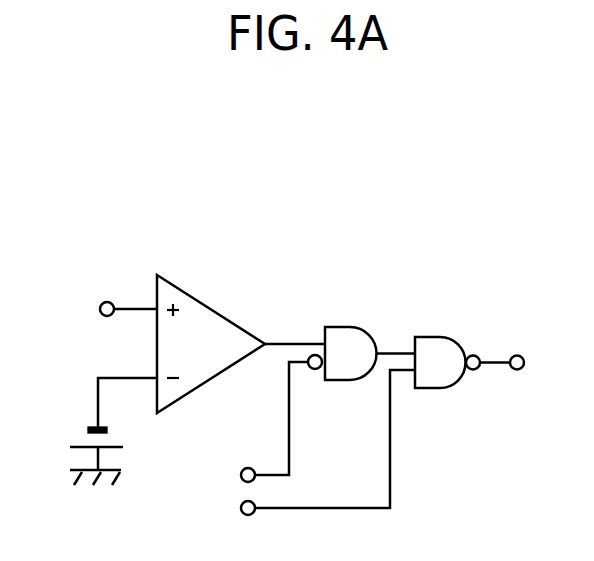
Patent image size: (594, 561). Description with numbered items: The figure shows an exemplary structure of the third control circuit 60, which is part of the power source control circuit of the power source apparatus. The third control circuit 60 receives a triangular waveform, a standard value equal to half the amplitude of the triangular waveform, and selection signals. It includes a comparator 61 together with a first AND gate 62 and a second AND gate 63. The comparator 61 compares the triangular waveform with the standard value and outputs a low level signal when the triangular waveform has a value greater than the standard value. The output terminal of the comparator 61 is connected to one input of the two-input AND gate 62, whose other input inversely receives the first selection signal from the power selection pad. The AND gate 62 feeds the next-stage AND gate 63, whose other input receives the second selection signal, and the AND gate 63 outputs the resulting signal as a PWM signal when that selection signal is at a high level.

The third control circuit 60 is at (453, 198).
The comparator 61 is at (217, 310).
The AND gate 62 is at (338, 326).
The AND gate 63 is at (433, 336).